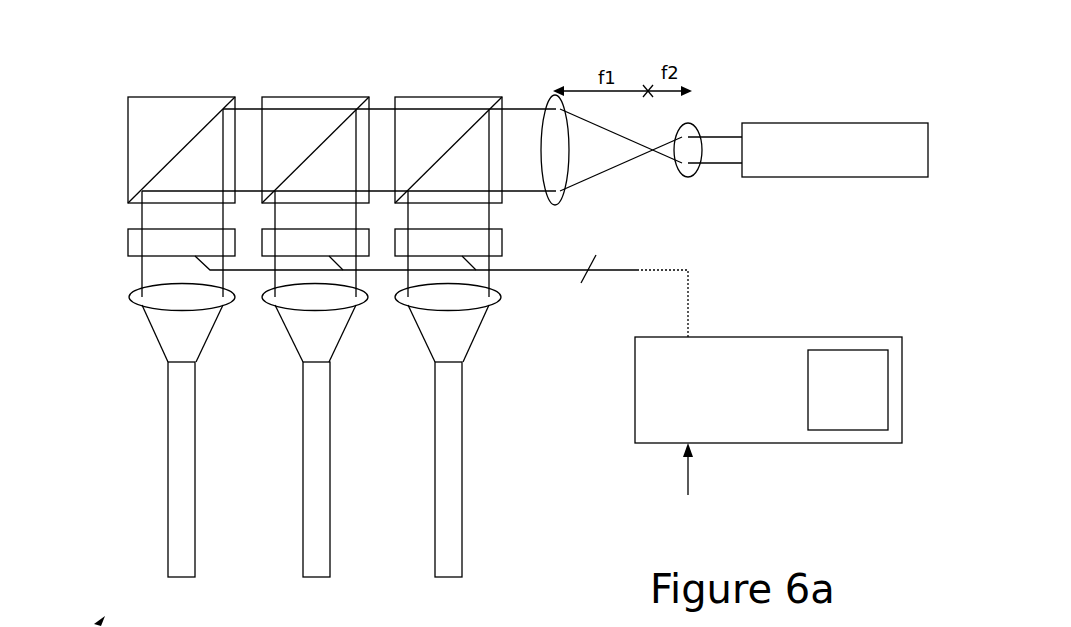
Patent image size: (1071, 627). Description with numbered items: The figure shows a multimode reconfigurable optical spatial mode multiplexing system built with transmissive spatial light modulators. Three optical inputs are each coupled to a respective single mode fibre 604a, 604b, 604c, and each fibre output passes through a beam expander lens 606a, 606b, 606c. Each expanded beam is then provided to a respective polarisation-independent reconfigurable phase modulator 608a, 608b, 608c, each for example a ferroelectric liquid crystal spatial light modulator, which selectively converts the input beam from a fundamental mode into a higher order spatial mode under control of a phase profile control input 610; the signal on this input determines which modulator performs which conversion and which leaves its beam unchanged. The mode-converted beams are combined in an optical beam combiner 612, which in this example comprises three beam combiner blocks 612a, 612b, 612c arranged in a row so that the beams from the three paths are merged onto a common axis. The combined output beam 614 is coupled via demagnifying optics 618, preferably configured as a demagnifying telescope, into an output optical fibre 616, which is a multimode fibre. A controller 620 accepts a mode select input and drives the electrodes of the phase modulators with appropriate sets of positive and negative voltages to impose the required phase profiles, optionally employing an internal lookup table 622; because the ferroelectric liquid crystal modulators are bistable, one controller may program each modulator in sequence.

The optical beam combiner 612 is at (108, 126).
The beam combiner block 612a is at (150, 96).
The beam combiner block 612b is at (302, 96).
The beam combiner block 612c is at (437, 96).
The combined output beam 614 is at (532, 86).
The demagnifying optics 618 is at (656, 50).
The output optical fibre 616 is at (855, 122).
The polarisation-independent reconfigurable phase modulator 608a is at (127, 243).
The polarisation-independent reconfigurable phase modulator 608b is at (285, 230).
The polarisation-independent reconfigurable phase modulator 608c is at (503, 243).
The phase profile control input 610 is at (540, 271).
The beam expander lens 606a is at (120, 321).
The beam expander lens 606b is at (367, 328).
The beam expander lens 606c is at (496, 328).
The single mode fibre 604a is at (195, 468).
The single mode fibre 604b is at (330, 468).
The single mode fibre 604c is at (462, 468).
The controller 620 is at (778, 407).
The lookup table 622 is at (848, 349).